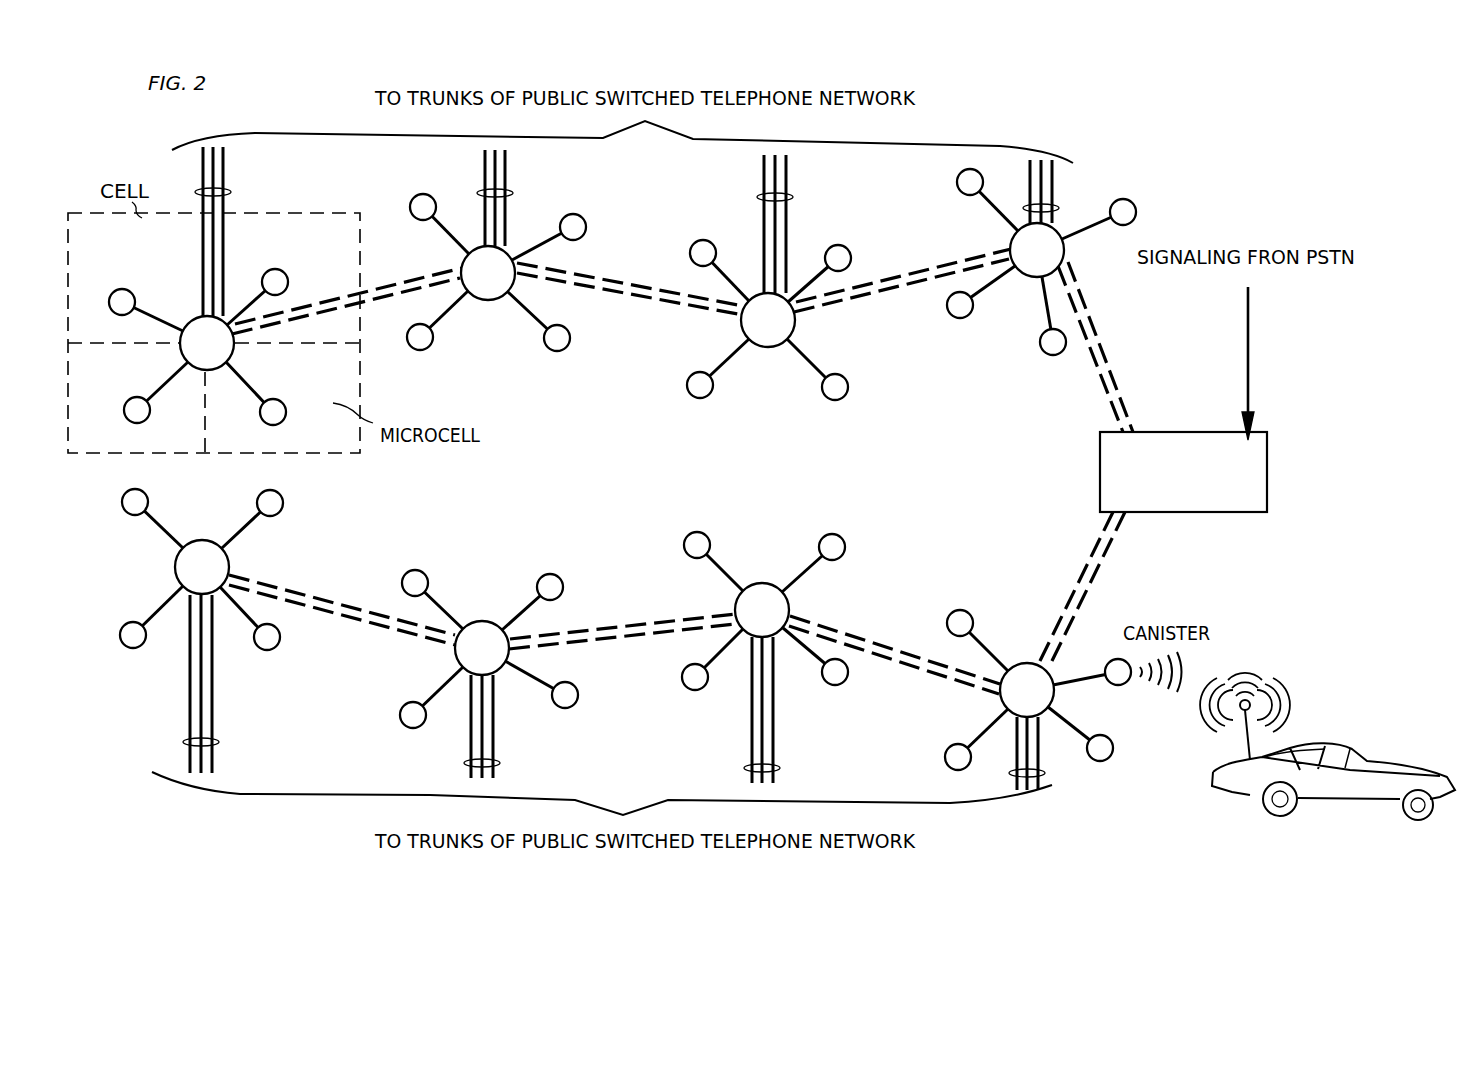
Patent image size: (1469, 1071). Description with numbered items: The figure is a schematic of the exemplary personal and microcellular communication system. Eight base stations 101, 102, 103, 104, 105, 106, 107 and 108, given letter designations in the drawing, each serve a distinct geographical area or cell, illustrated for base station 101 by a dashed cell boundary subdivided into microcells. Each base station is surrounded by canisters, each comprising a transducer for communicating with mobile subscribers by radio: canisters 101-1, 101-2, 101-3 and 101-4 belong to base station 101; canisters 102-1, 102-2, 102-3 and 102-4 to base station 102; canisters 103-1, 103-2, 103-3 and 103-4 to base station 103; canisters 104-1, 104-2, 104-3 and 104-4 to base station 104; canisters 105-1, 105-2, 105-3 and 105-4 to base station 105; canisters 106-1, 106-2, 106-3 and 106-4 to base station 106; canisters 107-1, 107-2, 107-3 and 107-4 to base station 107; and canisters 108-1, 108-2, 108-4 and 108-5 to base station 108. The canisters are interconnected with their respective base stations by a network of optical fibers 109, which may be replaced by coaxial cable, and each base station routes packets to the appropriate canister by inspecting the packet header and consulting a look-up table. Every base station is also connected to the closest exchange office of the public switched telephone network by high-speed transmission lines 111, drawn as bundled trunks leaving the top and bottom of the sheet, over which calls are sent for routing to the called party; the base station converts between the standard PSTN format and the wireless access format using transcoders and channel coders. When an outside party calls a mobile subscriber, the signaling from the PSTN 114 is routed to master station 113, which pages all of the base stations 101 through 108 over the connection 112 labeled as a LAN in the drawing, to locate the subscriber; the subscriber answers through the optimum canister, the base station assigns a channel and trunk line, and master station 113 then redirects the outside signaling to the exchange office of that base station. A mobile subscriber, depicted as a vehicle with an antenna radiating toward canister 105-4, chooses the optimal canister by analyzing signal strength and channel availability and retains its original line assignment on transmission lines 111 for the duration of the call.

The base station 101 is at (200, 370).
The canister 101-1 is at (126, 291).
The canister 101-2 is at (128, 418).
The canister 101-3 is at (287, 415).
The canister 101-4 is at (277, 270).
The base station 102 is at (484, 300).
The canister 102-1 is at (411, 347).
The canister 102-2 is at (566, 350).
The canister 102-3 is at (597, 198).
The canister 102-4 is at (415, 199).
The base station 103 is at (765, 346).
The canister 103-1 is at (703, 239).
The canister 103-2 is at (693, 396).
The canister 103-3 is at (845, 395).
The canister 103-4 is at (858, 232).
The base station 104 is at (1030, 276).
The canister 104-1 is at (950, 320).
The canister 104-2 is at (1048, 357).
The canister 104-3 is at (1125, 198).
The canister 104-4 is at (958, 176).
The base station 105 is at (1020, 667).
The canister 105-1 is at (949, 620).
The canister 105-2 is at (945, 760).
The canister 105-3 is at (1113, 748).
The canister 105-4 is at (1118, 685).
The base station 106 is at (760, 585).
The canister 106-1 is at (692, 531).
The canister 106-2 is at (690, 690).
The canister 106-3 is at (845, 682).
The canister 106-4 is at (834, 533).
The base station 107 is at (488, 624).
The canister 107-1 is at (412, 568).
The canister 107-2 is at (410, 728).
The canister 107-3 is at (572, 706).
The canister 107-4 is at (562, 562).
The base station 108 is at (200, 540).
The canister 108-1 is at (163, 487).
The canister 108-2 is at (133, 648).
The canister 108-4 is at (300, 488).
The canister 108-5 is at (291, 657).
The optical fibers 109 is at (250, 388).
The transmission lines 111 is at (246, 185).
The local area network (LAN) 112 is at (1080, 577).
The master station 113 is at (1180, 432).
The signaling from PSTN 114 is at (1252, 363).